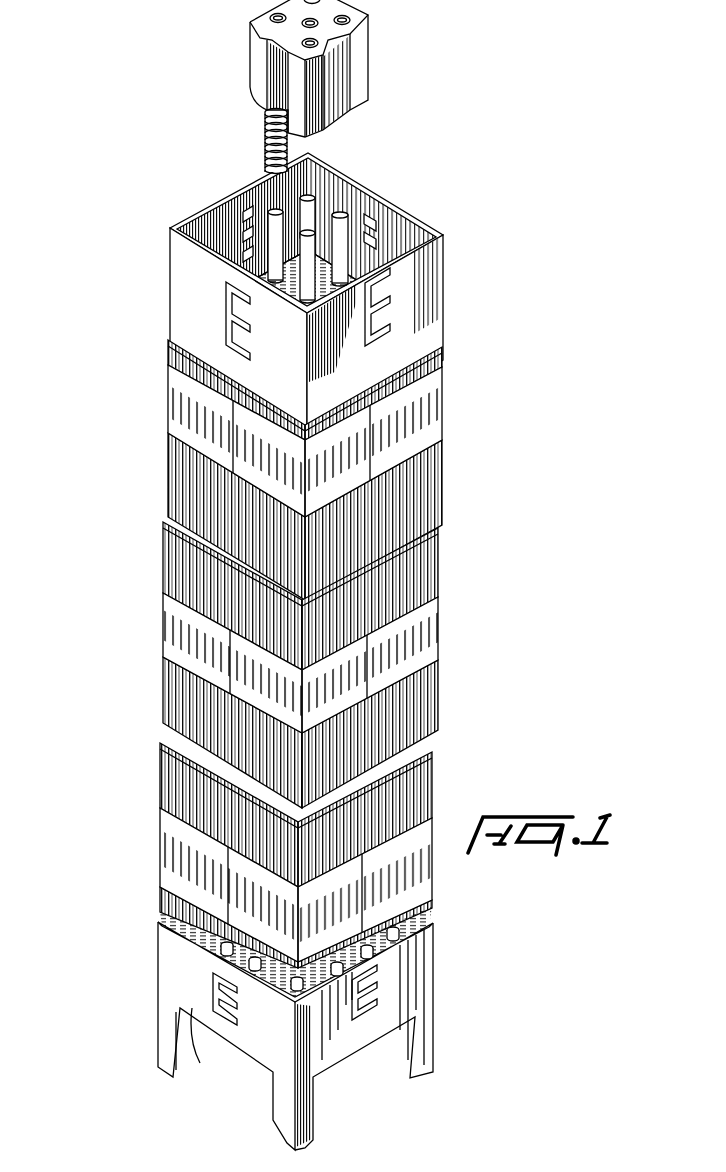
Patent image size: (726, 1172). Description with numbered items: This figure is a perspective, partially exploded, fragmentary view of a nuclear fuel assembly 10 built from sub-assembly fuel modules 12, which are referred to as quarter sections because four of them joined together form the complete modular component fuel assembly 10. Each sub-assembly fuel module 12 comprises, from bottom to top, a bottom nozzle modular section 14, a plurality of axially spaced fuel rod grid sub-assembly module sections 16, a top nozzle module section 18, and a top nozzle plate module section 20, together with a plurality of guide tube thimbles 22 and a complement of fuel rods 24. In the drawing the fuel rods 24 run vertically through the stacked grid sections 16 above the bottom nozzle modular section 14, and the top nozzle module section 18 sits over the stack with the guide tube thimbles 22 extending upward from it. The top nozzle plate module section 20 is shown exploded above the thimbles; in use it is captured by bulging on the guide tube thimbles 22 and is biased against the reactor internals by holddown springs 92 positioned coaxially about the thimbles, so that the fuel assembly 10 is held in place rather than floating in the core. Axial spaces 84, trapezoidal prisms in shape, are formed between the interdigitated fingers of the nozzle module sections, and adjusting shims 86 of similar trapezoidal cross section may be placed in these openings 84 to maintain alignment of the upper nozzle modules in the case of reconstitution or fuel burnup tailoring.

The modular component fuel assembly 10 is at (269, 575).
The sub-assembly fuel module 12 is at (319, 654).
The bottom nozzle modular section 14 is at (423, 962).
The fuel rod grid sub-assembly module section 16 is at (428, 387).
The top nozzle module section 18 is at (207, 207).
The top nozzle plate module section 20 is at (363, 50).
The guide tube thimbles 22 is at (347, 213).
The fuel rods 24 is at (420, 570).
The axial spaces 84 is at (227, 290).
The adjusting shims 86 is at (385, 337).
The holddown springs 92 is at (263, 135).